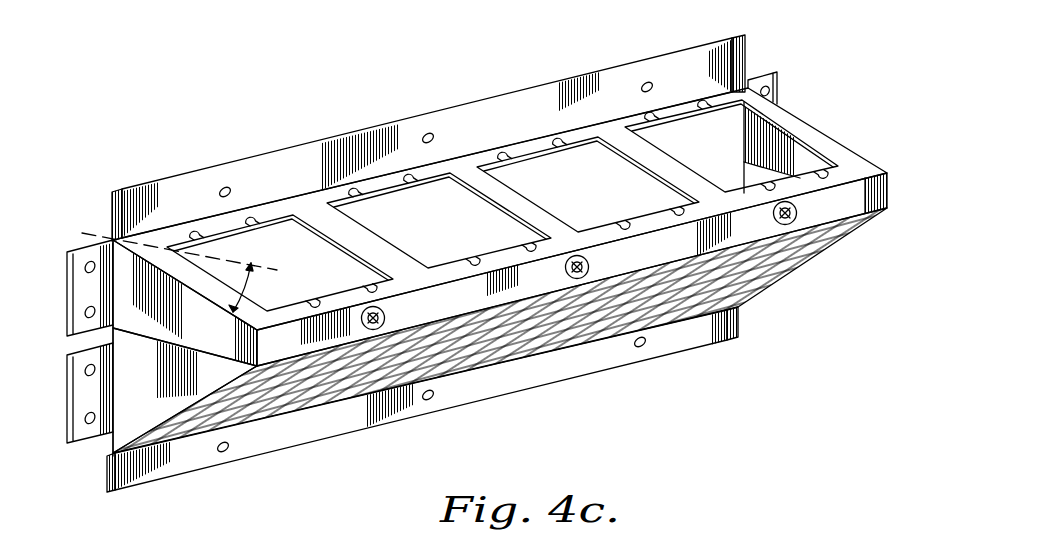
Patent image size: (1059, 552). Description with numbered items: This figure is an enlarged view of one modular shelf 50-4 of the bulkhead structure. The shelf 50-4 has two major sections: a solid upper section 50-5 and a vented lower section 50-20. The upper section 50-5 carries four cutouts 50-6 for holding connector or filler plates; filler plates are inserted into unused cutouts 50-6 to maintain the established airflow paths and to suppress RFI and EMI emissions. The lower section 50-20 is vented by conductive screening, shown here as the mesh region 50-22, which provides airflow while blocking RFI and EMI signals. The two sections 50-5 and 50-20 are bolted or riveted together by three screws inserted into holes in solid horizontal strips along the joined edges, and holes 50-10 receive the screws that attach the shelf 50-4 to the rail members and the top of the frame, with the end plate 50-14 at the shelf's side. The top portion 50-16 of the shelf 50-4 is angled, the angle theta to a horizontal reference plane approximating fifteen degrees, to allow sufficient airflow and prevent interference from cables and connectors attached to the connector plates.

The modular shelf 50-4 is at (755, 36).
The solid upper section 50-5 is at (66, 305).
The cutouts 50-6 is at (551, 162).
The holes 50-10 is at (86, 262).
The end plate 50-14 is at (888, 188).
The top portion of modular shelf 50-16 is at (574, 256).
The vented lower section 50-20 is at (66, 427).
The mesh screen 50-22 is at (806, 247).